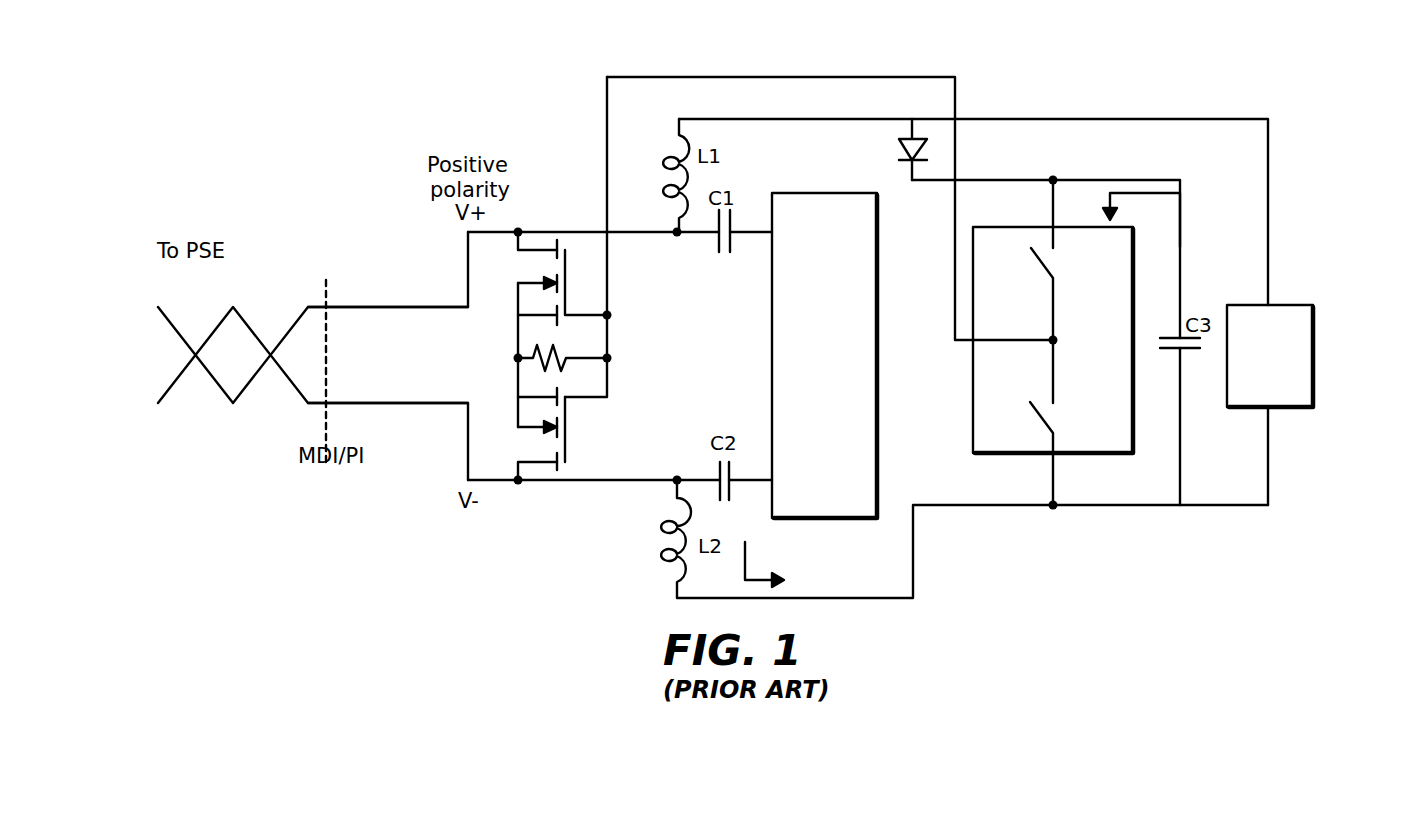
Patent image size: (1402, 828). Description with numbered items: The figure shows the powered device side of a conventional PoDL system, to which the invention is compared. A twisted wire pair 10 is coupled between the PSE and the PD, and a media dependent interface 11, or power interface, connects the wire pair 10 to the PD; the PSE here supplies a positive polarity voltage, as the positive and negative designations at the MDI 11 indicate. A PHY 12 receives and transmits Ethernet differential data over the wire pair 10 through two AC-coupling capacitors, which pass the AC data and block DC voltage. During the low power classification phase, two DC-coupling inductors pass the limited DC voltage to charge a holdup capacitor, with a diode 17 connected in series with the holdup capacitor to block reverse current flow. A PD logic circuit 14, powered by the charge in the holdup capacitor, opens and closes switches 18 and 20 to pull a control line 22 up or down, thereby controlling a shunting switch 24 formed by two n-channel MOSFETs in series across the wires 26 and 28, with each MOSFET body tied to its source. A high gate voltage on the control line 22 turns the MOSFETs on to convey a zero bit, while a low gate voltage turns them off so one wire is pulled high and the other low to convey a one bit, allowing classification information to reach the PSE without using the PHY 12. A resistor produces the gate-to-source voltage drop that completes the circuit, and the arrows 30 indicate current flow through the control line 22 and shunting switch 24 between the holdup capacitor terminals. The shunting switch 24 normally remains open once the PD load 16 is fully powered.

The twisted wire pair 10 is at (216, 398).
The media dependent interface (MDI) 11 is at (325, 417).
The PHY 12 is at (850, 193).
The PD logic circuit 14 is at (1042, 227).
The PD load 16 is at (1253, 303).
The diode 17 is at (897, 143).
The switch 18 is at (1050, 251).
The switch 20 is at (1040, 418).
The control line 22 is at (767, 77).
The shunting switch 24 is at (580, 255).
The wire 26 is at (293, 327).
The wire 28 is at (293, 392).
The arrows 30 is at (750, 567).